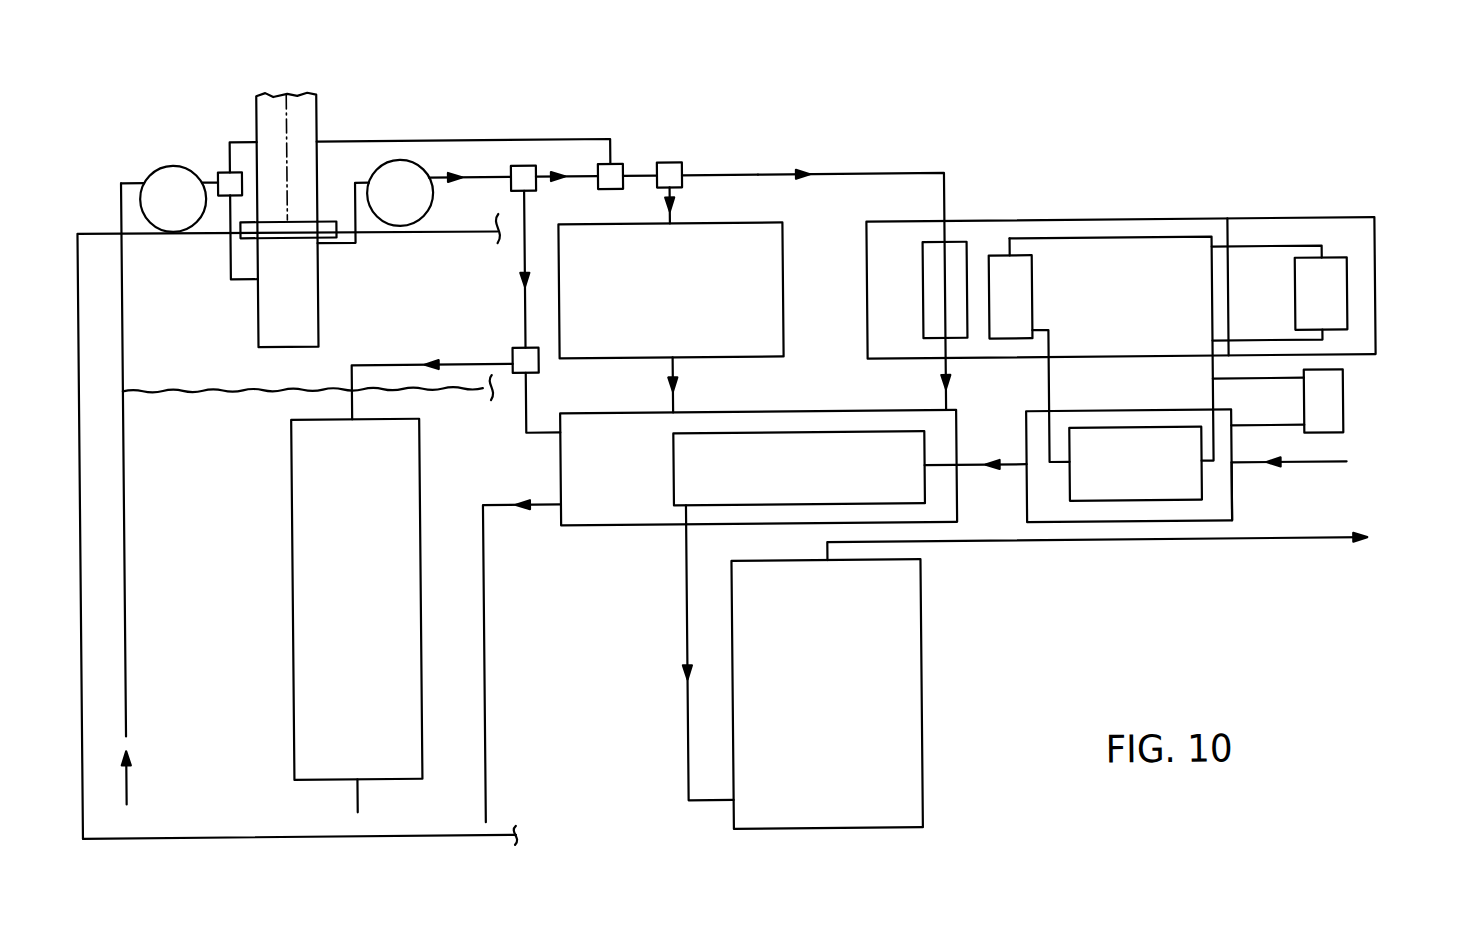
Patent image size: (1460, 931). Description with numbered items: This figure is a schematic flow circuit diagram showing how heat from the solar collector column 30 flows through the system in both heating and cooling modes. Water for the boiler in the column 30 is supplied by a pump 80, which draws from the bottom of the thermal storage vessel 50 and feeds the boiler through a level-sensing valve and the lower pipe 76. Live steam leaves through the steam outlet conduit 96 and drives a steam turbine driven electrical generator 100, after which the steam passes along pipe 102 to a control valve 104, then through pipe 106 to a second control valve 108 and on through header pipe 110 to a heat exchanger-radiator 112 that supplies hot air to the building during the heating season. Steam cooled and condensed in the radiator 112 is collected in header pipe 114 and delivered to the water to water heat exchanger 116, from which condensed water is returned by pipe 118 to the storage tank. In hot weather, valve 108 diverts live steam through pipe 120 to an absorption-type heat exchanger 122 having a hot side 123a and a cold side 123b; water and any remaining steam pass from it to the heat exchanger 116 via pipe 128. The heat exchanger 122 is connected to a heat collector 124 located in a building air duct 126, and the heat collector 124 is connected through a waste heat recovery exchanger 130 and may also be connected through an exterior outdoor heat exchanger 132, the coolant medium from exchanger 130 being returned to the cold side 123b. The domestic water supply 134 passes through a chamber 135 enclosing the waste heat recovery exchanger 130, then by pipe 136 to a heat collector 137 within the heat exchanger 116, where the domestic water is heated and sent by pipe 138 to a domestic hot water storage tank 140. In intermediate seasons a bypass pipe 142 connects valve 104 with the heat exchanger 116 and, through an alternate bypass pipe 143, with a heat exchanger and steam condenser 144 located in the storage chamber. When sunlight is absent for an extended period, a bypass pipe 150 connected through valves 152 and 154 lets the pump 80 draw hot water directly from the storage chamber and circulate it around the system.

The column 30 is at (308, 116).
The thermal storage vessel 50 is at (80, 561).
The lower pipe 76 is at (310, 311).
The pump 80 is at (160, 166).
The steam outlet conduit 96 is at (357, 242).
The steam turbine driven electrical generator 100 is at (405, 173).
The pipe 102 is at (487, 176).
The control valve 104 is at (523, 165).
The pipe 106 is at (642, 176).
The control valve 108 is at (685, 164).
The header pipe 110 is at (673, 190).
The heat exchanger-radiator 112 is at (670, 290).
The header pipe 114 is at (676, 372).
The water to water heat exchanger 116 is at (778, 414).
The pipe 118 is at (483, 684).
The pipe 120 is at (886, 176).
The absorption-type heat exchanger 122 is at (868, 263).
The hot side 123a is at (953, 264).
The cold side 123b is at (1006, 274).
The heat collector 124 is at (1335, 277).
The air duct 126 is at (1259, 225).
The pipe 128 is at (943, 372).
The waste heat recovery exchanger 130 is at (1159, 496).
The exterior outdoor heat exchanger 132 is at (1335, 411).
The domestic water supply 134 is at (1319, 470).
The chamber 135 is at (1232, 483).
The pipe 136 is at (1007, 466).
The heat collector 137 is at (799, 468).
The pipe 138 is at (685, 624).
The domestic hot water storage tank 140 is at (1050, 681).
The bypass pipe 142 is at (526, 321).
The alternate bypass pipe 143 is at (352, 396).
The heat exchanger and steam condenser 144 is at (310, 666).
The bypass pipe 150 is at (242, 140).
The valve 152 is at (222, 174).
The valve 154 is at (614, 164).